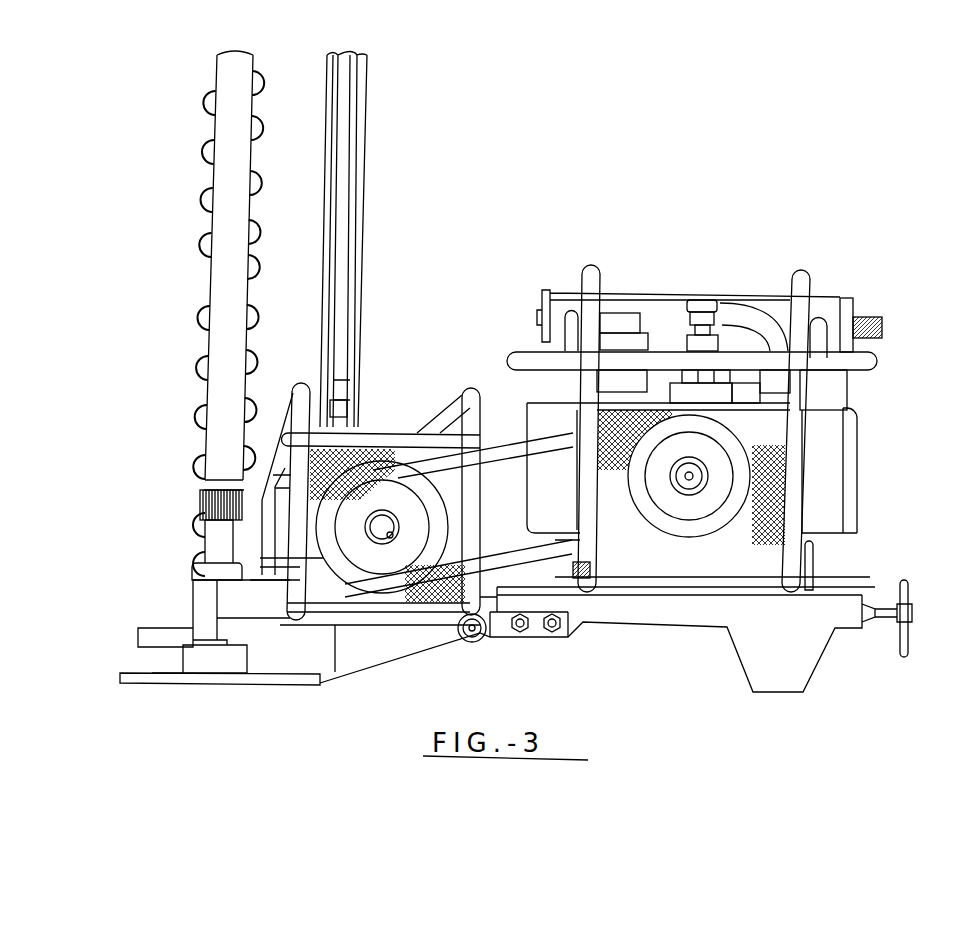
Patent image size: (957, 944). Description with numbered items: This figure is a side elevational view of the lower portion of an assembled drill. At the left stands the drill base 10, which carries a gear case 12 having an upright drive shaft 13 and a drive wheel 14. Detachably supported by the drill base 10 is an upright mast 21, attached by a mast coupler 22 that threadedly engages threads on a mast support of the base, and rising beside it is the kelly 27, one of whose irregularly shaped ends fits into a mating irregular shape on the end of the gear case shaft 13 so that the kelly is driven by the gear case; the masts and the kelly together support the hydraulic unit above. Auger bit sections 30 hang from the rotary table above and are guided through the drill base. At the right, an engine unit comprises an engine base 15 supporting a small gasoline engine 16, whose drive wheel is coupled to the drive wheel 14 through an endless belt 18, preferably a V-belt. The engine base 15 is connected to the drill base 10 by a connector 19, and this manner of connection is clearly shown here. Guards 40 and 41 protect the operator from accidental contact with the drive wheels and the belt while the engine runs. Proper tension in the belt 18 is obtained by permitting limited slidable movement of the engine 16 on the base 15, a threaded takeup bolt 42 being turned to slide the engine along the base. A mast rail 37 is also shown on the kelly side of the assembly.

The drill base 10 is at (120, 673).
The gear case 12 is at (265, 480).
The upright drive shaft 13 is at (350, 425).
The drive wheel 14 is at (440, 506).
The engine base 15 is at (738, 661).
The gasoline engine 16 is at (703, 300).
The endless belt 18 is at (520, 442).
The connector 19 is at (492, 636).
The upright mast 21 is at (215, 179).
The mast coupler 22 is at (200, 505).
The kelly 27 is at (367, 188).
The auger bit section 30 is at (262, 130).
The mast rail 37 is at (352, 390).
The guard 40 is at (880, 362).
The guard 41 is at (484, 374).
The threaded takeup bolt 42 is at (912, 637).